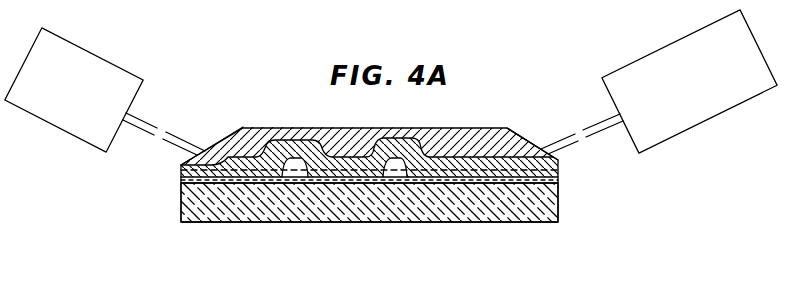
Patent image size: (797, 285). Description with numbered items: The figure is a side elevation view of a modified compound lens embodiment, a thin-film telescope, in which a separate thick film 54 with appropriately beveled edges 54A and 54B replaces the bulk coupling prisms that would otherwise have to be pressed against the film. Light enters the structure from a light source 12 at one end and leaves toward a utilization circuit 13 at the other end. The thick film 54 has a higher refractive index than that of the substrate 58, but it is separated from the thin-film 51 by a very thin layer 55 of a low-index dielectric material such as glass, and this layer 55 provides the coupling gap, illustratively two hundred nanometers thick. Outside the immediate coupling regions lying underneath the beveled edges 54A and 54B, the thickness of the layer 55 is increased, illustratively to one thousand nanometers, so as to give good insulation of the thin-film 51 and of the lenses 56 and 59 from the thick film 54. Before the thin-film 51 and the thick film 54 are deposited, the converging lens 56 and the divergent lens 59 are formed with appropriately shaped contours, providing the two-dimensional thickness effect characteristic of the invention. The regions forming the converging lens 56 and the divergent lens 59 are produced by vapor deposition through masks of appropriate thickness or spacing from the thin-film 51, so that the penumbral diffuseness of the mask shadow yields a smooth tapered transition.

The light source 12 is at (97, 56).
The utilization circuit 13 is at (645, 57).
The thin-film 51 is at (181, 178).
The thick film 54 is at (252, 127).
The beveled edge 54A is at (220, 141).
The beveled edge 54B is at (521, 137).
The thin layer of low-index dielectric material 55 is at (181, 170).
The converging lens 56 is at (290, 177).
The substrate 58 is at (312, 208).
The divergent lens 59 is at (400, 160).